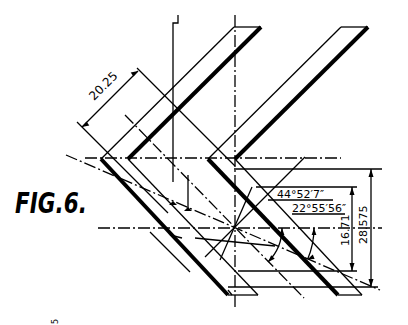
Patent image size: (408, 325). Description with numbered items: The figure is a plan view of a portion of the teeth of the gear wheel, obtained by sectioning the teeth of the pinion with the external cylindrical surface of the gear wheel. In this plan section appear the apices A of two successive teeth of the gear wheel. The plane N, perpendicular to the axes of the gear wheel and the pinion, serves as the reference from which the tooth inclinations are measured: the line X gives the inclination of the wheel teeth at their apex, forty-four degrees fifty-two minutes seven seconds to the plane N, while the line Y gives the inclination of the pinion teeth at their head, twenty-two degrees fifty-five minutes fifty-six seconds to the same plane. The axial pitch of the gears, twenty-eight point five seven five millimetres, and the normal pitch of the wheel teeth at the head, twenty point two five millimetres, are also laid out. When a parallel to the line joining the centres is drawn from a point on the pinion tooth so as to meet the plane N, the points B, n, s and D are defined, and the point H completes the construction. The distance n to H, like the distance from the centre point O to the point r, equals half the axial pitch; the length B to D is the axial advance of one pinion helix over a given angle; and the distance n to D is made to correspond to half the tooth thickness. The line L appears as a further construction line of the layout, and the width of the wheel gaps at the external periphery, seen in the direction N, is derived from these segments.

The apex of gear wheel tooth A is at (248, 32).
The inclination line of wheel teeth X is at (212, 208).
The inclination line of pinion teeth Y is at (222, 226).
The plane NN perpendicular to the axes N is at (238, 221).
The centre point O'' O is at (255, 209).
The point H is at (179, 164).
The point D is at (182, 200).
The point S s is at (173, 207).
The point n is at (173, 222).
The point B is at (170, 235).
The line L is at (296, 264).
The point r' r is at (224, 297).